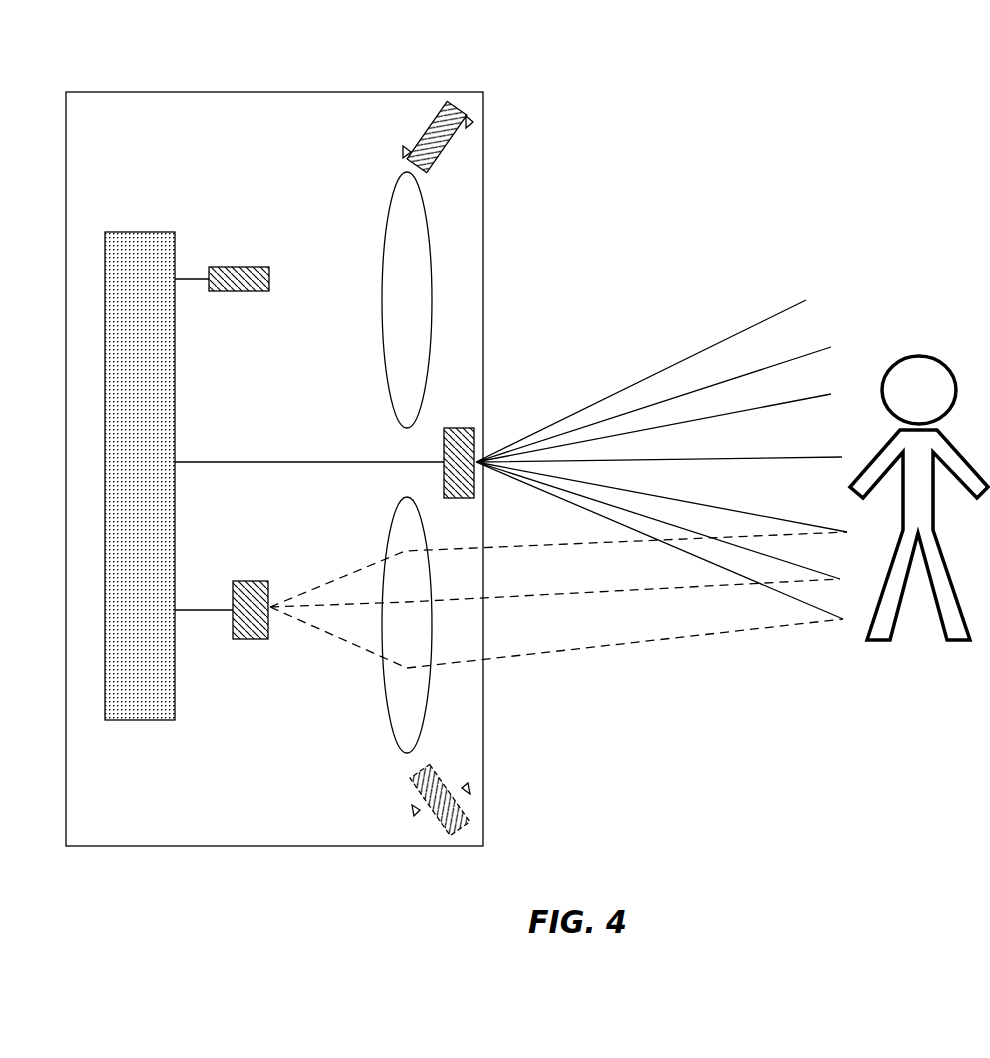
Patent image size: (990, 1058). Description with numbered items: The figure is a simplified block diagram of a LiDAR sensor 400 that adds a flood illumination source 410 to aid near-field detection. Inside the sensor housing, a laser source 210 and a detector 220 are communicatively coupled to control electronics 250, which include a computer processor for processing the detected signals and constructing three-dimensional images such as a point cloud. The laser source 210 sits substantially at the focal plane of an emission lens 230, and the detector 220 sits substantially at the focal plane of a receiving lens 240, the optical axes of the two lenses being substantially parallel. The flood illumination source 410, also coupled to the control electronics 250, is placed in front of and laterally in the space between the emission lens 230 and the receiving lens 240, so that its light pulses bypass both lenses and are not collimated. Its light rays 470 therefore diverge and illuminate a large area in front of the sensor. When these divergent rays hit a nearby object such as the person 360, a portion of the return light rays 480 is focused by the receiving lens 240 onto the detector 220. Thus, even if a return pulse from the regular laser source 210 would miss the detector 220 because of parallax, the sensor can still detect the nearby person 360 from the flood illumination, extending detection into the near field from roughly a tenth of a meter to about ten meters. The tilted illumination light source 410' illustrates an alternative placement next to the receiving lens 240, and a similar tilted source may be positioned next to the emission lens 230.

The LiDAR sensor 400 is at (208, 92).
The control electronics 250 is at (149, 232).
The laser source 210 is at (244, 267).
The detector 220 is at (252, 581).
The emission lens 230 is at (388, 220).
The receiving lens 240 is at (385, 545).
The flood illumination source 410 is at (410, 463).
The illumination light source 410' is at (396, 799).
The light rays 470 is at (662, 372).
The return light rays 480 is at (630, 650).
The person 360 is at (917, 356).